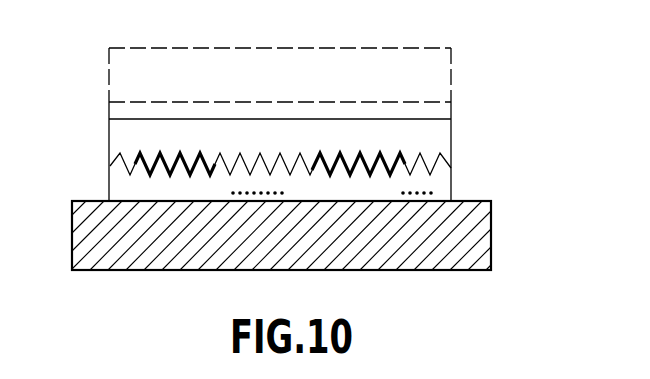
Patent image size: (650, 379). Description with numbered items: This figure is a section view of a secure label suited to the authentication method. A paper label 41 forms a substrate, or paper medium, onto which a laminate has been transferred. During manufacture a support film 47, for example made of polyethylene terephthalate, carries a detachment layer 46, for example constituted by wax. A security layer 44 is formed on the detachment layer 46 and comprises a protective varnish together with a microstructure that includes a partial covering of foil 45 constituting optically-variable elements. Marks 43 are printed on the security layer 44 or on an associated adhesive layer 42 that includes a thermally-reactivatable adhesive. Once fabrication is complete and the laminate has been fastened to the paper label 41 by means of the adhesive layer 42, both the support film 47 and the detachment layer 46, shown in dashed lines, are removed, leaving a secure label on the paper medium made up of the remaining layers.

The paper label 41 is at (470, 250).
The adhesive layer 42 is at (122, 190).
The marks 43 is at (432, 191).
The security layer 44 is at (452, 143).
The foil 45 is at (152, 160).
The detachment layer 46 is at (440, 109).
The support film 47 is at (437, 80).